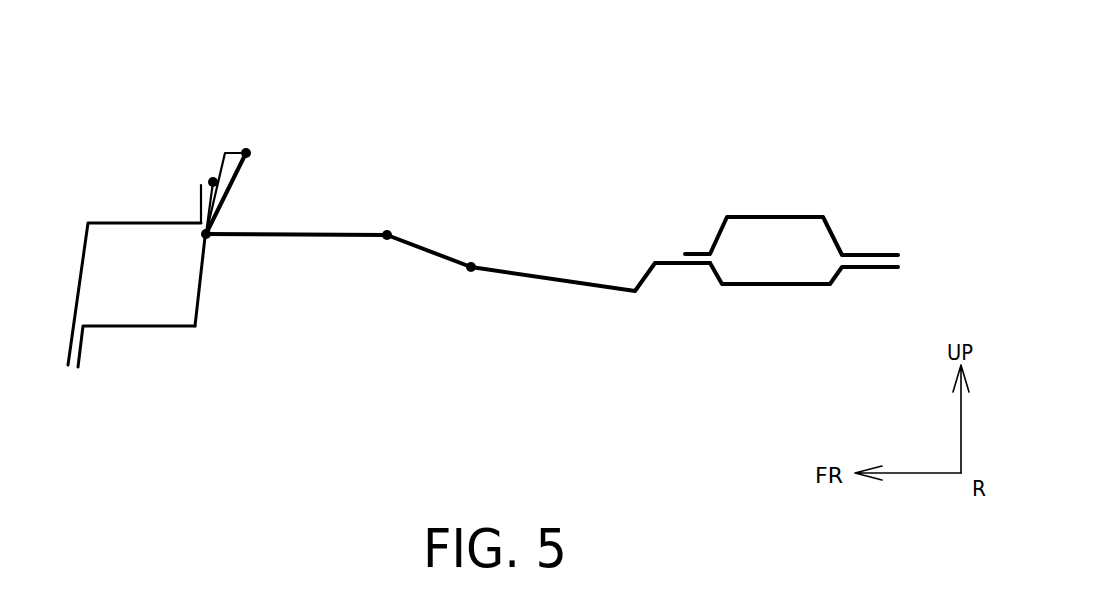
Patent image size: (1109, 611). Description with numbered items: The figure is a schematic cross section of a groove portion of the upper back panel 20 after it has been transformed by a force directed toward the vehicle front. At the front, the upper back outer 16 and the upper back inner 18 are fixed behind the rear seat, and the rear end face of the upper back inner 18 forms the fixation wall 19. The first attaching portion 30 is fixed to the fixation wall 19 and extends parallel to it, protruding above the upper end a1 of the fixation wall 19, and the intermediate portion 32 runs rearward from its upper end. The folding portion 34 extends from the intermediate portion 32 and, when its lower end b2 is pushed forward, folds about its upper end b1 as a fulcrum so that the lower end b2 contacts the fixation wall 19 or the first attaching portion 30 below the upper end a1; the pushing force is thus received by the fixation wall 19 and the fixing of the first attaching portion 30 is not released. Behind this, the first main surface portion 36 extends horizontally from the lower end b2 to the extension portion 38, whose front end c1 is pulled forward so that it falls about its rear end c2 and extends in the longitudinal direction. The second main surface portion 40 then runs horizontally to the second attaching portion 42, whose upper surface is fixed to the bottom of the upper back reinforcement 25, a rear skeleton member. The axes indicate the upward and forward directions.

The upper back outer 16 is at (133, 223).
The upper back inner 18 is at (143, 327).
The fixation wall 19 is at (202, 287).
The upper back panel 20 is at (505, 168).
The upper back reinforcement 25 is at (765, 217).
The first attaching portion 30 is at (223, 168).
The intermediate portion 32 is at (236, 153).
The folding portion 34 is at (227, 183).
The first main surface portion 36 is at (328, 240).
The extension portion 38 is at (440, 252).
The second main surface portion 40 is at (563, 282).
The second attaching portion 42 is at (777, 284).
The upper end of the fixation wall a1 is at (200, 173).
The upper end of the folding portion b1 is at (257, 144).
The lower end of the folding portion b2 is at (217, 246).
The front end of the extension portion c1 is at (386, 221).
The rear end of the extension portion c2 is at (471, 281).